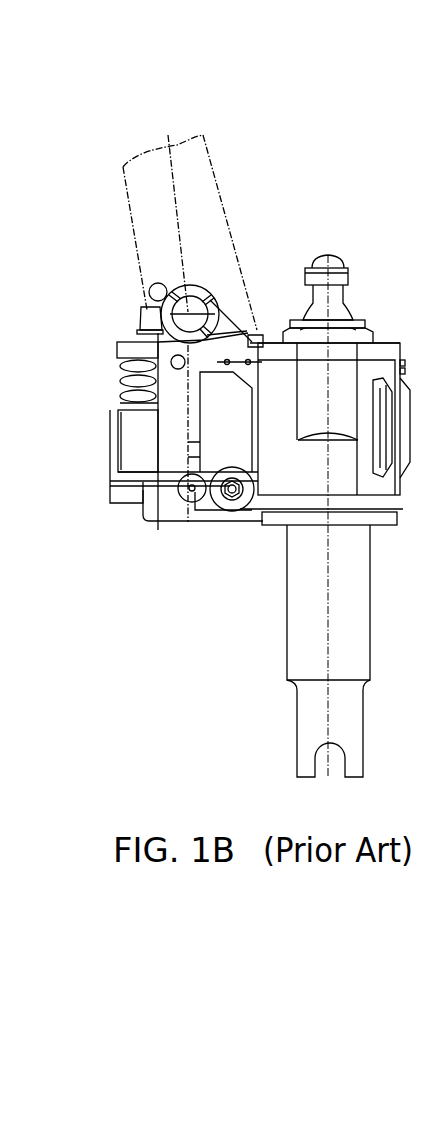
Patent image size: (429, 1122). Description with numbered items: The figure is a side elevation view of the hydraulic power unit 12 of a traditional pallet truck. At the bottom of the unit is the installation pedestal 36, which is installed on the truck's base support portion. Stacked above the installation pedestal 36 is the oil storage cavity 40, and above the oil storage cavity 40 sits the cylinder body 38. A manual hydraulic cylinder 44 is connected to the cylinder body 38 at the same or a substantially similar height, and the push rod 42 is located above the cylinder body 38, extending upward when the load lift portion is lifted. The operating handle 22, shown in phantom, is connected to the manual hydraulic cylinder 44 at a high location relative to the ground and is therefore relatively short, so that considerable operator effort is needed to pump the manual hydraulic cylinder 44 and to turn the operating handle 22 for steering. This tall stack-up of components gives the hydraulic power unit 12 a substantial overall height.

The hydraulic power unit 12 is at (389, 182).
The operating handle 22 is at (140, 232).
The installation pedestal 36 is at (313, 704).
The cylinder body 38 is at (286, 470).
The oil storage cavity 40 is at (299, 602).
The push rod 42 is at (333, 298).
The manual hydraulic cylinder 44 is at (138, 417).